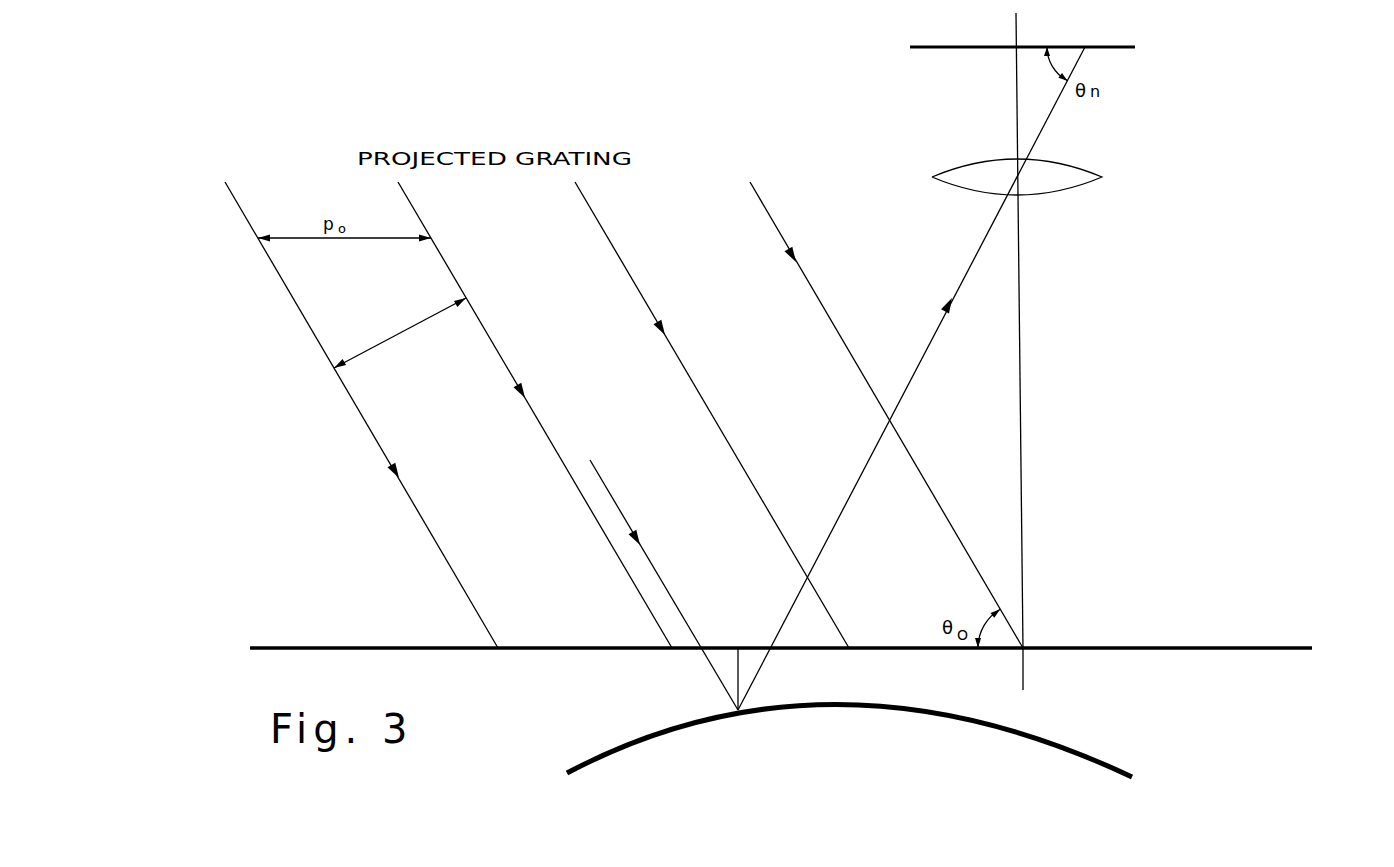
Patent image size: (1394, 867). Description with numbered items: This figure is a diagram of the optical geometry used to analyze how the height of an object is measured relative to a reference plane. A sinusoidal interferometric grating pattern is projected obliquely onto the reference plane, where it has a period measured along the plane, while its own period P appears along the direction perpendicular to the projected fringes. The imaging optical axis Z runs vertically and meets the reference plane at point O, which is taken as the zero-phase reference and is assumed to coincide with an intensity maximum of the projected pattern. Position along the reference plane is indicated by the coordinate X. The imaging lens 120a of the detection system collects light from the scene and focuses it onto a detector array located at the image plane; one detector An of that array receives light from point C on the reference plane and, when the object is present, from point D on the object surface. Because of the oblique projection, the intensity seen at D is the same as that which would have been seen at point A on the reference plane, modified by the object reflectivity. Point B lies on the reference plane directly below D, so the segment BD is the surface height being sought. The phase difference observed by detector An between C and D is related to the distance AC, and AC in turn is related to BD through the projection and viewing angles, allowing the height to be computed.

The imaging lens 120a is at (1102, 177).
The reference plane X is at (781, 633).
The intersection of imaging optical axis with reference plane O is at (1033, 669).
The optical axis Z is at (1028, 330).
The detector An is at (1137, 37).
The point A on reference plane A is at (664, 585).
The point B on reference plane B is at (736, 664).
The point C on reference plane C is at (911, 378).
The point D on object D is at (849, 740).
The period of projected pattern P is at (400, 333).